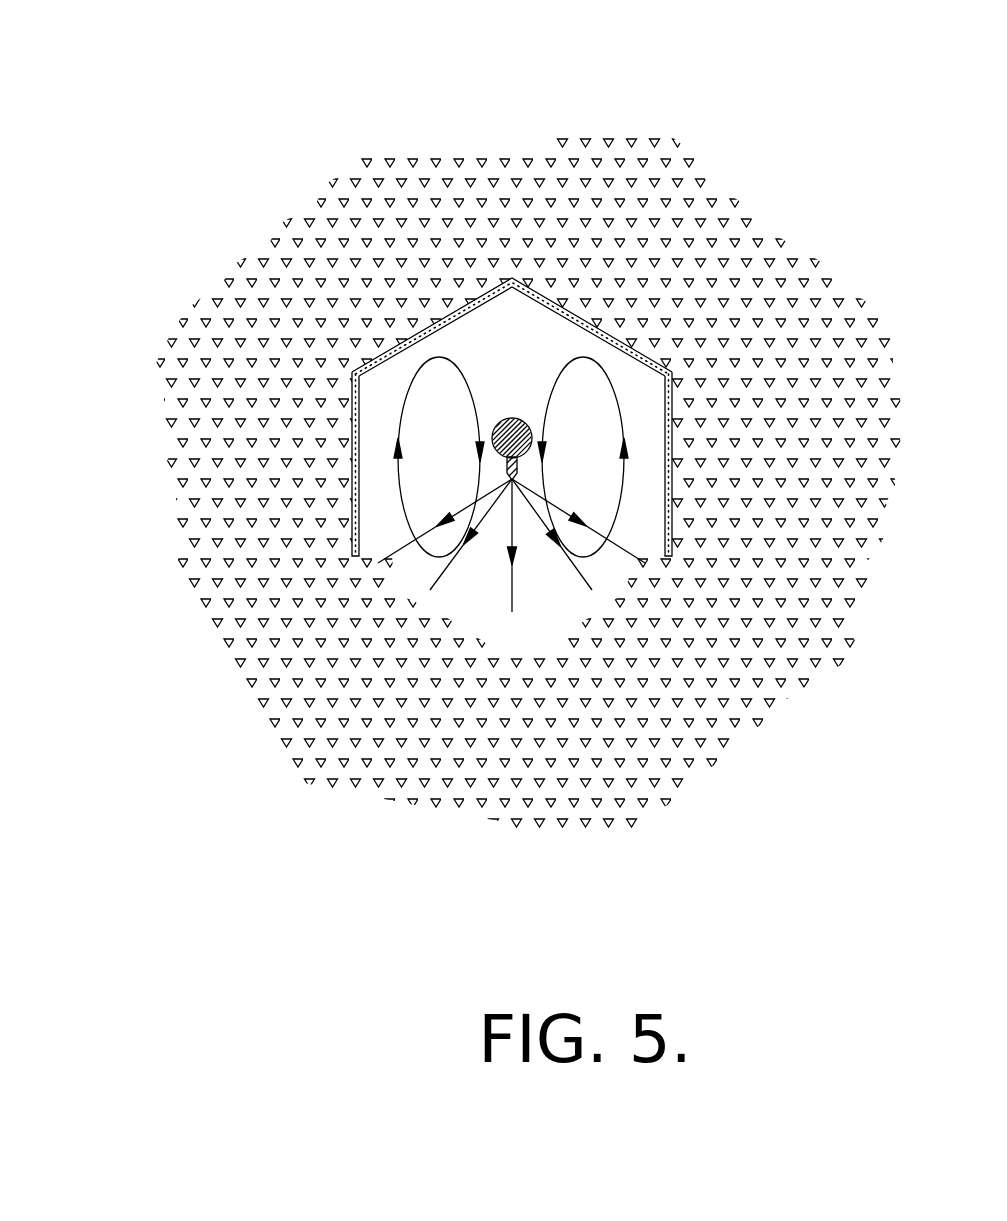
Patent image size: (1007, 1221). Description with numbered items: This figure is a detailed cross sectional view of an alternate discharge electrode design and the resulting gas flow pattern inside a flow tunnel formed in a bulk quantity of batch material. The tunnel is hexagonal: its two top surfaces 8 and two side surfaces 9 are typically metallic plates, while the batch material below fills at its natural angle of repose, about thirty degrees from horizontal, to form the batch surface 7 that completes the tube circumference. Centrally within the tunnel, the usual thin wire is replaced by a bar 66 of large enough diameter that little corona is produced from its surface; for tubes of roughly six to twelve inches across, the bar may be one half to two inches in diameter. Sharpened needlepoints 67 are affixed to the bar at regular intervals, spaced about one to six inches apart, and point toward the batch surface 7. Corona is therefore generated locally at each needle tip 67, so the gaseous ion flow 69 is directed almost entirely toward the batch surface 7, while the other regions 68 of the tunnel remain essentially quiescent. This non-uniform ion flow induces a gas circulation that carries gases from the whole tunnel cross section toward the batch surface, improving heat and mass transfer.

The batch surface 7 is at (430, 589).
The top surfaces 8 is at (587, 322).
The side surfaces 9 is at (671, 455).
The bar 66 is at (491, 432).
The needlepoint 67 is at (507, 475).
The quiescent regions 68 is at (452, 369).
The gaseous ion flow 69 is at (507, 556).